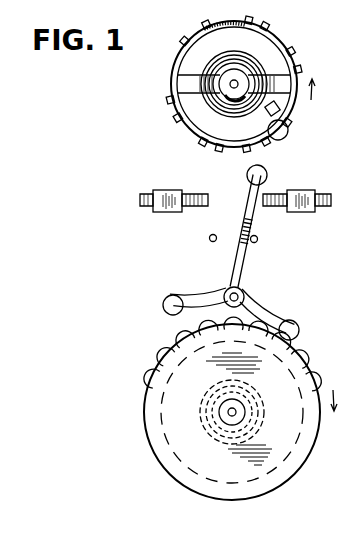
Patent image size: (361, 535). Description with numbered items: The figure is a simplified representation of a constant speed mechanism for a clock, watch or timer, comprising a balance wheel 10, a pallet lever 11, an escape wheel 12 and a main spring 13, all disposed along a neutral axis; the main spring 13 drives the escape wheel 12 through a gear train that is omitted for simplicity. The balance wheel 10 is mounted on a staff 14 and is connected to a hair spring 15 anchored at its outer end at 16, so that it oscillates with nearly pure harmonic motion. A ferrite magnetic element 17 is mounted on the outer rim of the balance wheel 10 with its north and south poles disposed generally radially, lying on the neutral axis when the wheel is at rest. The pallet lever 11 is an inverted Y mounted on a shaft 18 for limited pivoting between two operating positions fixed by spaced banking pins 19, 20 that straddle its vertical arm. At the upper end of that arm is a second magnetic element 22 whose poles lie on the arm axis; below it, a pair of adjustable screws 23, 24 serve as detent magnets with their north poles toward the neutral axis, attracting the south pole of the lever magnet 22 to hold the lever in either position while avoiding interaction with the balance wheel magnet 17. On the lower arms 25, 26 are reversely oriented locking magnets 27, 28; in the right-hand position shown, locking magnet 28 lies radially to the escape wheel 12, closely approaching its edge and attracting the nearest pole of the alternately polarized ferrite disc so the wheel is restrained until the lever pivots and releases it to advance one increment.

The balance wheel 10 is at (282, 46).
The pallet lever 11 is at (211, 271).
The escape wheel 12 is at (304, 449).
The main spring 13 is at (203, 424).
The staff 14 is at (232, 88).
The hair spring 15 is at (238, 60).
The hair spring anchor 16 is at (284, 113).
The magnetic element 17 is at (289, 136).
The shaft 18 is at (243, 293).
The banking pin 19 is at (209, 238).
The banking pin 20 is at (258, 240).
The second magnetic element 22 is at (267, 175).
The detent screw 23 is at (192, 190).
The detent screw 24 is at (318, 178).
The lower arm 25 is at (193, 295).
The lower arm 26 is at (268, 312).
The locking magnet 27 is at (163, 308).
The locking magnet 28 is at (298, 327).